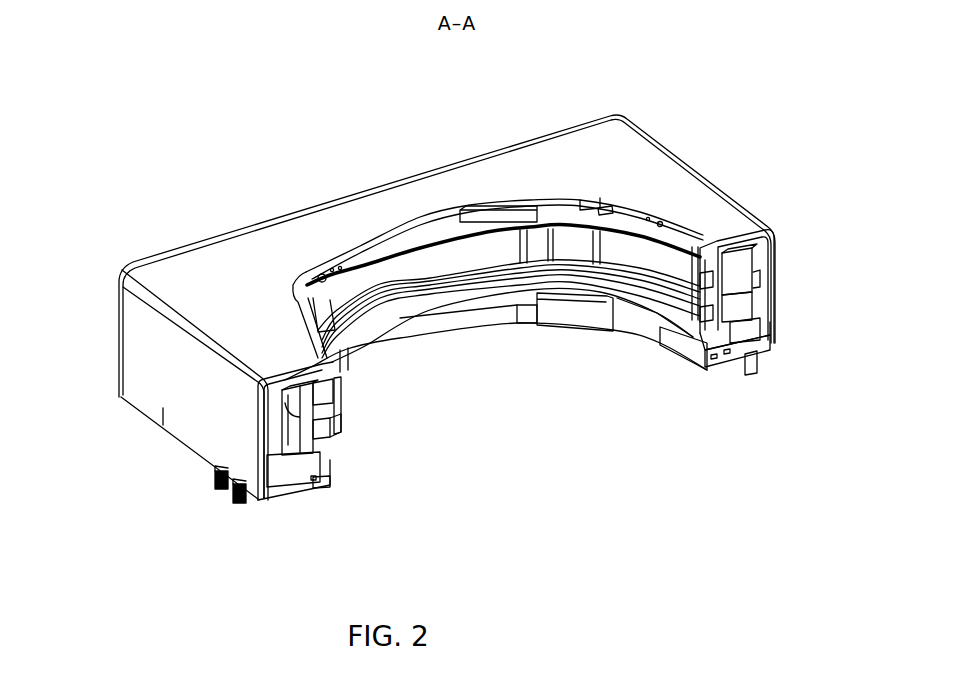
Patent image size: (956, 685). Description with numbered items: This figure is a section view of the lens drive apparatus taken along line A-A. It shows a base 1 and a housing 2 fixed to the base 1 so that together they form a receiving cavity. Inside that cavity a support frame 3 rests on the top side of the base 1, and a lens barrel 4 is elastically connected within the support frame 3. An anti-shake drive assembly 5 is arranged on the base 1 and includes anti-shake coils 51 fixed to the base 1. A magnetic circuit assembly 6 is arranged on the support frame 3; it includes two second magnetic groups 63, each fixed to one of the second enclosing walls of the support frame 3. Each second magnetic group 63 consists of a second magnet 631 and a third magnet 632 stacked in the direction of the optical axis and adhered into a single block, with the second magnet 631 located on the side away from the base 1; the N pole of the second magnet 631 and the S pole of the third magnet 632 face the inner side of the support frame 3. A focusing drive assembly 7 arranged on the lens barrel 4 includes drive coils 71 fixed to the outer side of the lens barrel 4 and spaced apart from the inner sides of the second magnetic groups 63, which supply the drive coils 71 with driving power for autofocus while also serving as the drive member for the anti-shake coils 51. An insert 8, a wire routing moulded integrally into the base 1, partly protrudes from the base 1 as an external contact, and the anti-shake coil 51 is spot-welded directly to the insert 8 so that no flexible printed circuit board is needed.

The base 1 is at (688, 350).
The housing 2 is at (240, 258).
The support frame 3 is at (252, 456).
The lens barrel 4 is at (337, 407).
The anti-shake drive assembly 5 is at (755, 331).
The anti-shake coil 51 is at (730, 343).
The magnetic circuit assembly 6 is at (738, 264).
The second magnetic group 63 is at (740, 305).
The second magnet 631 is at (280, 420).
The third magnet 632 is at (322, 440).
The focusing drive assembly 7 is at (336, 432).
The drive coil 71 is at (703, 240).
The insert 8 is at (316, 478).